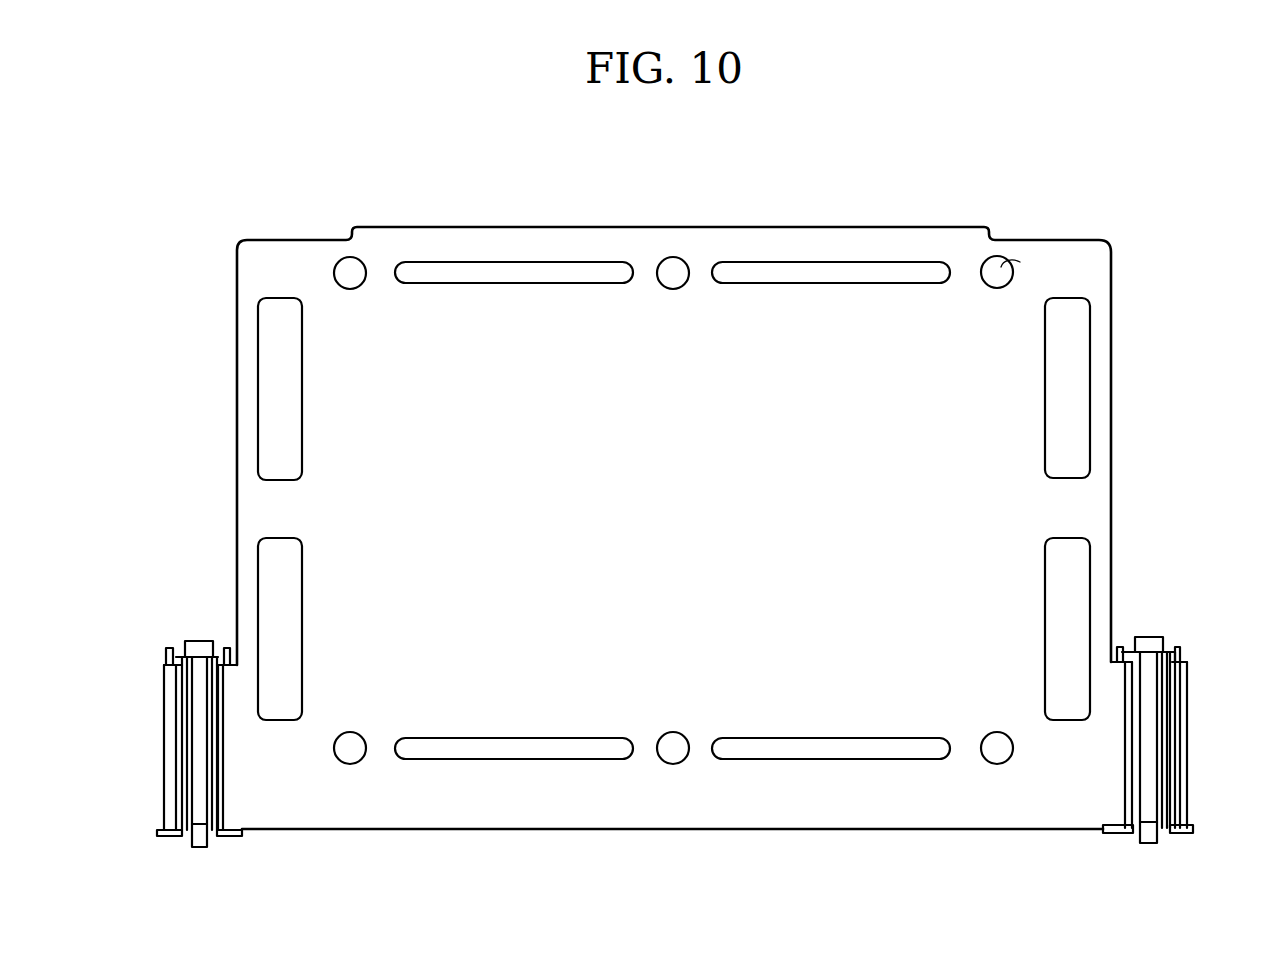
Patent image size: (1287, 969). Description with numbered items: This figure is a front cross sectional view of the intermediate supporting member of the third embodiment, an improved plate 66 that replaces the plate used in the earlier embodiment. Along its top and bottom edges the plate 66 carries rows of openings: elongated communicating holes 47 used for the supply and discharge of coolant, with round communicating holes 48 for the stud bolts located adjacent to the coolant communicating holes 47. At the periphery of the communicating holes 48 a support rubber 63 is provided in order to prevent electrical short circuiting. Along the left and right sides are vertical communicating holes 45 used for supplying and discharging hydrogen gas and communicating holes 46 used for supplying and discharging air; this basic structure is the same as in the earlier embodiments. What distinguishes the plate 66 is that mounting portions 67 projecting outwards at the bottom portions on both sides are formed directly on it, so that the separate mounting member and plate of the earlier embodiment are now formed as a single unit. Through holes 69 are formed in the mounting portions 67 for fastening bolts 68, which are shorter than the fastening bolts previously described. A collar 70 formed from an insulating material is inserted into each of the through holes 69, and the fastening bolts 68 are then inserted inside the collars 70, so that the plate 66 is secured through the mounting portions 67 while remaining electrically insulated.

The communicating holes 45 is at (268, 360).
The communicating holes 46 is at (278, 558).
The communicating holes 47 is at (531, 272).
The communicating holes 48 is at (672, 272).
The support rubber 63 is at (1005, 272).
The plate 66 is at (1111, 358).
The mounting portions 67 is at (1180, 732).
The fastening bolts 68 is at (1152, 637).
The through holes 69 is at (1158, 833).
The collar 70 is at (1182, 660).